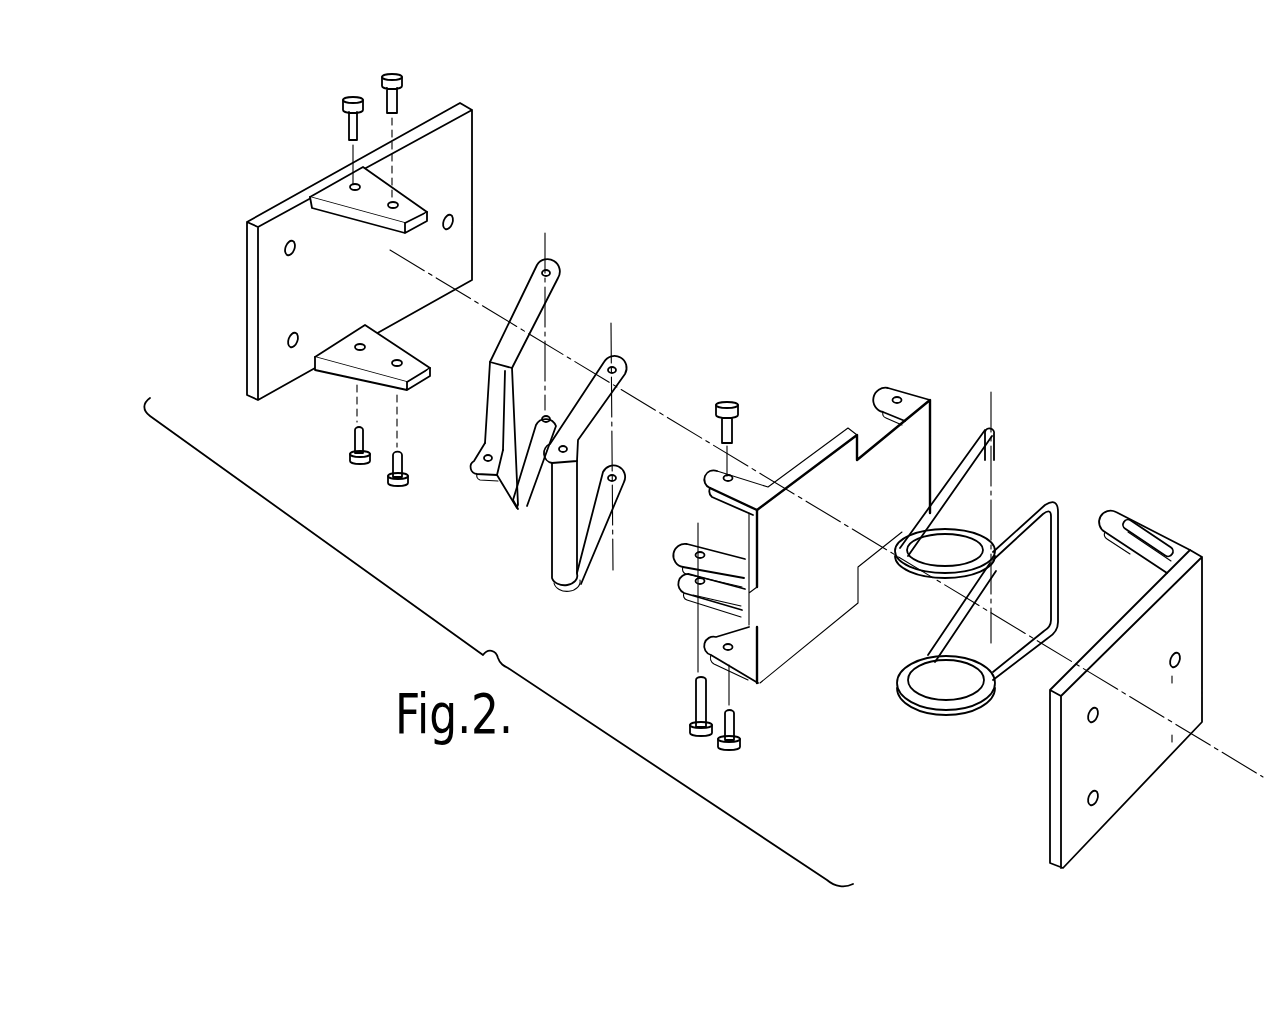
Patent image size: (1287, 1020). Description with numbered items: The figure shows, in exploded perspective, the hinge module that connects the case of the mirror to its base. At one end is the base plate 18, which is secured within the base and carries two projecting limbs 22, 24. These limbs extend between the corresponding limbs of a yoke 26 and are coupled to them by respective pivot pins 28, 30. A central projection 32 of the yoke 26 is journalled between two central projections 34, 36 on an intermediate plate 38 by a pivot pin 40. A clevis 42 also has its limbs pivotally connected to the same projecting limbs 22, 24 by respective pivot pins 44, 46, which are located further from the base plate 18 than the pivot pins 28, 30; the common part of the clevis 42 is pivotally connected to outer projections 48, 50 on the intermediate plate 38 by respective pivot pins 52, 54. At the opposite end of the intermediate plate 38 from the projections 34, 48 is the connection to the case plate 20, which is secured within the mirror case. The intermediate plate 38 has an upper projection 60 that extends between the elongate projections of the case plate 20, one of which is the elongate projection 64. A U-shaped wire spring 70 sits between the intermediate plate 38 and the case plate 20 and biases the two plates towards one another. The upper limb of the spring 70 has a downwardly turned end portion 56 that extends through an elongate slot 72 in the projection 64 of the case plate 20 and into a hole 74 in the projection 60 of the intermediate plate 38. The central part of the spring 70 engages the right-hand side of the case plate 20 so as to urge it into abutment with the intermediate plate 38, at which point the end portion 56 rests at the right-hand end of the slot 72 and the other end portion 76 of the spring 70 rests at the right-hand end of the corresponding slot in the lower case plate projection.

The base plate 18 is at (278, 208).
The case plate 20 is at (1193, 632).
The projecting limb 22 is at (403, 200).
The projecting limb 24 is at (397, 348).
The yoke 26 is at (535, 299).
The pivot pin 28 is at (342, 112).
The pivot pin 30 is at (353, 455).
The central projection 32 is at (475, 472).
The central projection 34 is at (680, 557).
The central projection 36 is at (682, 583).
The intermediate plate 38 is at (818, 456).
The pivot pin 40 is at (695, 697).
The clevis 42 is at (557, 530).
The pivot pin 44 is at (400, 84).
The pivot pin 46 is at (397, 482).
The outer projection 48 is at (740, 482).
The outer projection 50 is at (740, 672).
The pivot pin 52 is at (716, 412).
The pivot pin 54 is at (743, 740).
The end portion 56 is at (997, 448).
The upper projection 60 is at (887, 407).
The elongate projection 64 is at (1122, 515).
The U-shaped wire spring 70 is at (1062, 523).
The elongate slot 72 is at (1153, 542).
The hole 74 is at (900, 397).
The end portion 76 is at (997, 572).